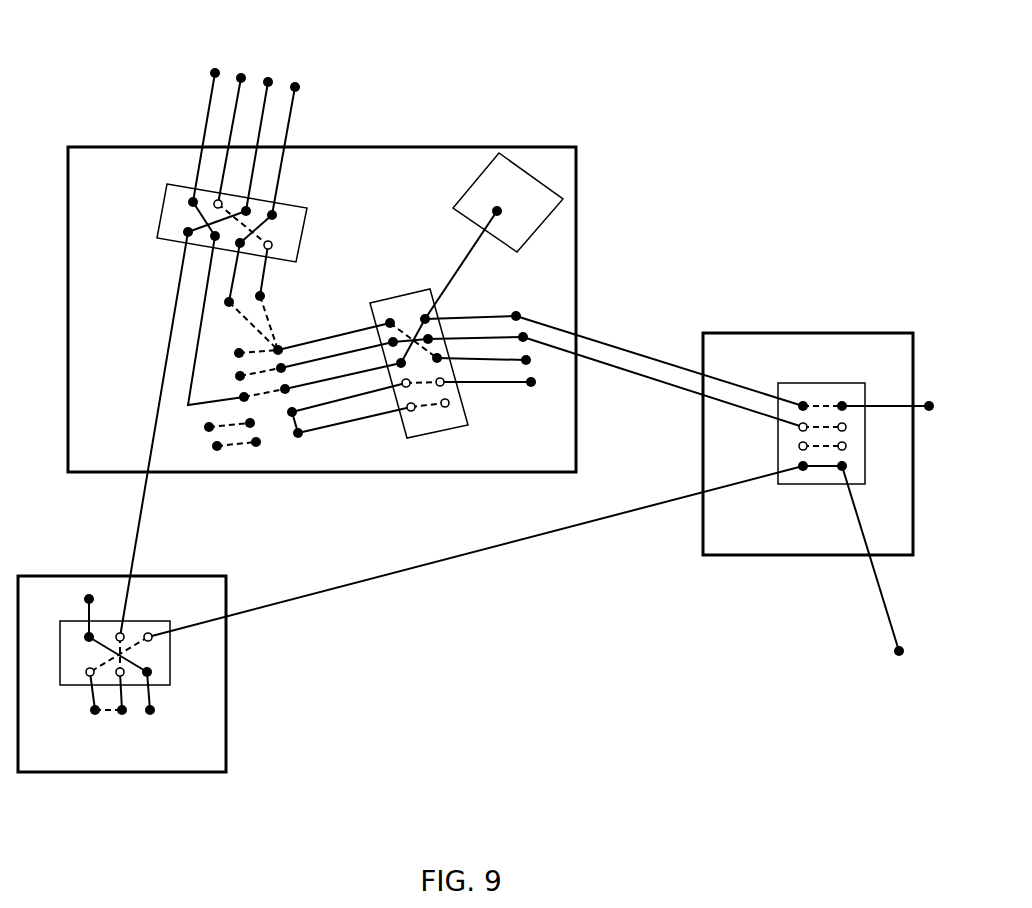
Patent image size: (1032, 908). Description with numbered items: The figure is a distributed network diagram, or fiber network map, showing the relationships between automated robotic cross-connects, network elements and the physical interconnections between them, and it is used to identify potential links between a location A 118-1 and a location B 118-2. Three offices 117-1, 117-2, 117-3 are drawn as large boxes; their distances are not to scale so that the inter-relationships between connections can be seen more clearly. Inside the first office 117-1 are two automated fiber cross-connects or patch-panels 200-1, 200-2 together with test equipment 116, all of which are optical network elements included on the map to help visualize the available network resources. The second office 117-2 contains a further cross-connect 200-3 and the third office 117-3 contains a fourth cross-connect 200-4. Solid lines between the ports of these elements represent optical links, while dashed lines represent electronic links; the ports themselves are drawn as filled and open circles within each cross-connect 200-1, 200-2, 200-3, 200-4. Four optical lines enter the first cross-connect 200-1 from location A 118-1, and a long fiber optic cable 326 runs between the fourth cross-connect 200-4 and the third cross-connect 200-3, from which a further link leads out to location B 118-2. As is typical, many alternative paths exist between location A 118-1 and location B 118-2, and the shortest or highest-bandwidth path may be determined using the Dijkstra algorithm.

The office 117-1 is at (525, 141).
The office 117-2 is at (790, 325).
The office 117-3 is at (125, 780).
The location A 118-1 is at (196, 77).
The location B 118-2 is at (880, 651).
The automated fiber cross-connect 200-1 is at (257, 410).
The automated fiber cross-connect 200-2 is at (584, 355).
The automated fiber cross-connect 200-3 is at (856, 503).
The automated fiber cross-connect 200-4 is at (115, 669).
The test equipment 116 is at (494, 236).
The fiber optic cable 326 is at (420, 568).